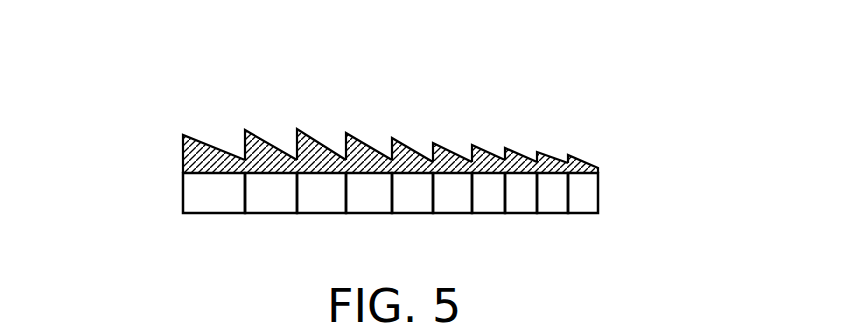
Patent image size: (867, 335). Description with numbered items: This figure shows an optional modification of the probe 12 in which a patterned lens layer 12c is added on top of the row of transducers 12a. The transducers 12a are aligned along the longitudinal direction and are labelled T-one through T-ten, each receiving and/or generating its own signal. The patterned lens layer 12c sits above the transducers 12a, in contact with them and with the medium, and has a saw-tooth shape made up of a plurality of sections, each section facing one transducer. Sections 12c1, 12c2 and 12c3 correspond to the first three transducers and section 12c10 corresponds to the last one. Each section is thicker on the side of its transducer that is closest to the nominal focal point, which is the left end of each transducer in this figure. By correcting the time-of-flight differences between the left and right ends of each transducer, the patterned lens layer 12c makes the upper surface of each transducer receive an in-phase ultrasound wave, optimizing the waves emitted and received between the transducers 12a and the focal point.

The probe 12 is at (552, 77).
The patterned lens layer 12c is at (160, 157).
The section of the patterned lens layer 12c1 is at (208, 152).
The section of the patterned lens layer 12c2 is at (262, 152).
The section of the patterned lens layer 12c3 is at (317, 152).
The section of the patterned lens layer 12c10 is at (584, 165).
The transducer 12a is at (203, 207).